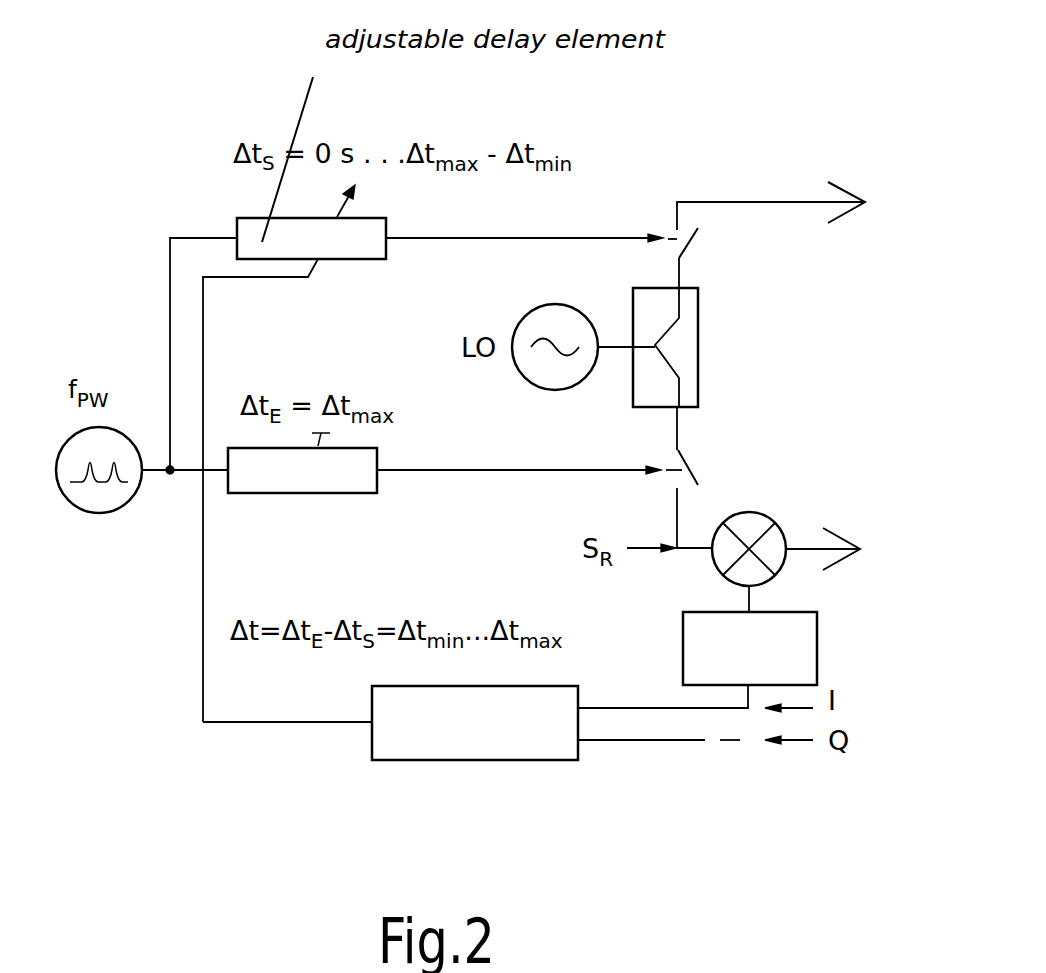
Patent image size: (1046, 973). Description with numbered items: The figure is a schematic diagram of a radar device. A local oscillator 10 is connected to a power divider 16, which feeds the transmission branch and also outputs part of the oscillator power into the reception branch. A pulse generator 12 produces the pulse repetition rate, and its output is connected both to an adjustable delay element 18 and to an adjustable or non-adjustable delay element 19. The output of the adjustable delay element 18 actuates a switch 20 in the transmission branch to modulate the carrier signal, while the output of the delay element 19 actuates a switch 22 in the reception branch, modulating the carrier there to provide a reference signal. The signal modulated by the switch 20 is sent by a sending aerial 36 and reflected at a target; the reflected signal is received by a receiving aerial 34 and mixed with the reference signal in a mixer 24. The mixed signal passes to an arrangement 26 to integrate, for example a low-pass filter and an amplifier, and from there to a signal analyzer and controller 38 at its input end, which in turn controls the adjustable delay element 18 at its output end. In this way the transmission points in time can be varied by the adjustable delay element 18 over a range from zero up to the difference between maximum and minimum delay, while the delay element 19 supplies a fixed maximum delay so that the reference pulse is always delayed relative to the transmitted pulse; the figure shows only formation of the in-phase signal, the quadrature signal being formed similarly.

The local oscillator 10 is at (535, 313).
The pulse generator 12 is at (98, 503).
The power divider 16 is at (700, 337).
The adjustable delay element 18 is at (247, 227).
The delay element 19 is at (355, 483).
The switch 20 is at (710, 236).
The switch 22 is at (708, 462).
The mixer 24 is at (772, 516).
The arrangement to integrate 26 is at (817, 650).
The receiving aerial 34 is at (858, 559).
The sending aerial 36 is at (867, 197).
The signal analyzer and controller 38 is at (445, 743).